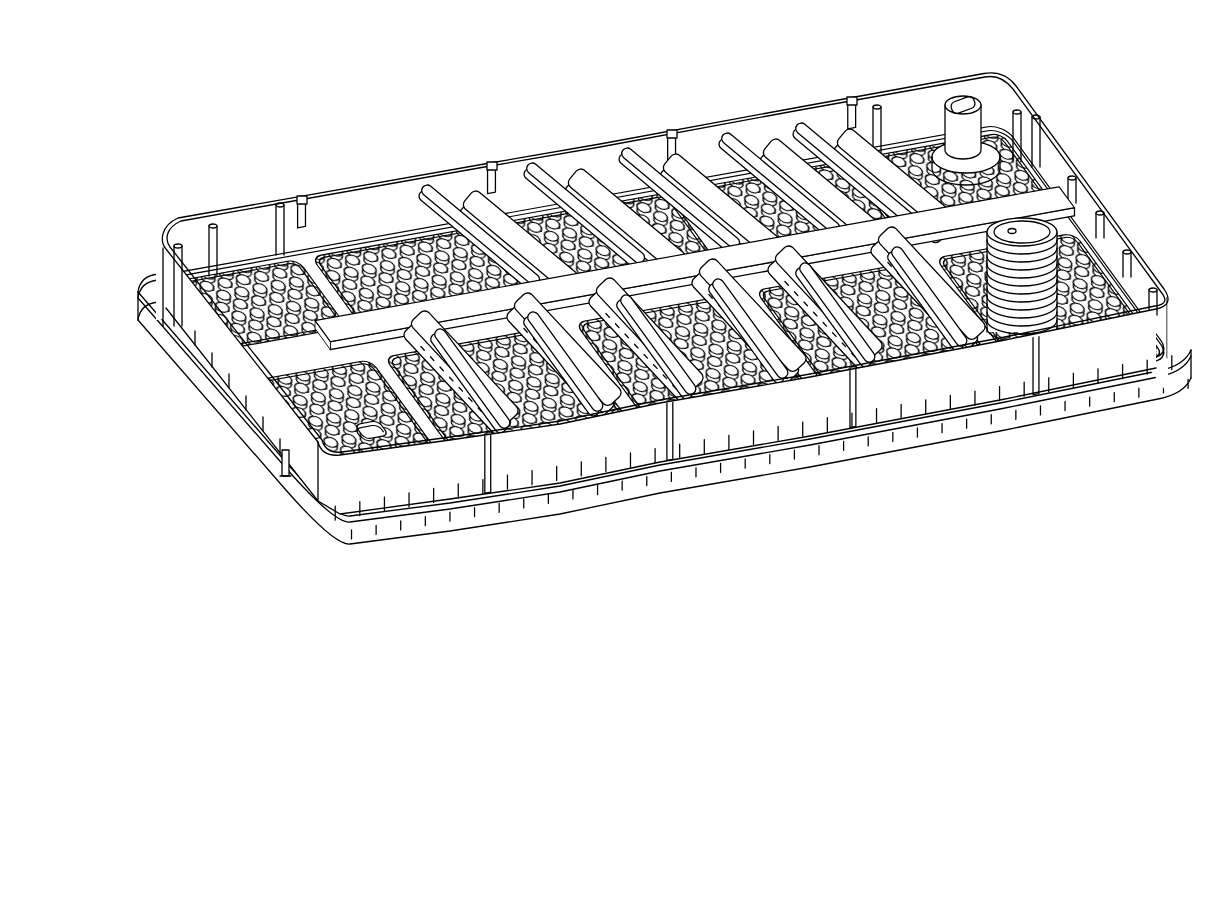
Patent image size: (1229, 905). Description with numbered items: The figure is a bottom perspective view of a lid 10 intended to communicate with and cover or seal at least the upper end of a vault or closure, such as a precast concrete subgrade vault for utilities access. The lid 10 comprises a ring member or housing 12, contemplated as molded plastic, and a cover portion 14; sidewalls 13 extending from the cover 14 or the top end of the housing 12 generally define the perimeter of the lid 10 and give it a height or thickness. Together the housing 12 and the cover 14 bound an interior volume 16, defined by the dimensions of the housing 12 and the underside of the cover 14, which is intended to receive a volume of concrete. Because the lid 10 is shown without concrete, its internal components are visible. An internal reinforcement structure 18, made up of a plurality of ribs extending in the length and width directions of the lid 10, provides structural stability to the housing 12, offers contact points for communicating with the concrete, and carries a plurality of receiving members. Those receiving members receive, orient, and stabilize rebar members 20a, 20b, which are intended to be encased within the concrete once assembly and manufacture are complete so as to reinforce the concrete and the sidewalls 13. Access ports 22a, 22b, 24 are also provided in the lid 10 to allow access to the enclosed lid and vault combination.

The lid 10 is at (242, 183).
The housing 12 is at (972, 76).
The sidewalls 13 is at (558, 511).
The cover portion 14 is at (392, 550).
The interior volume 16 is at (340, 207).
The internal reinforcement structure 18 is at (831, 150).
The rebar member 20a is at (628, 157).
The rebar member 20b is at (1058, 182).
The access port 22a is at (968, 132).
The access port 22b is at (330, 460).
The access port 24 is at (1055, 268).